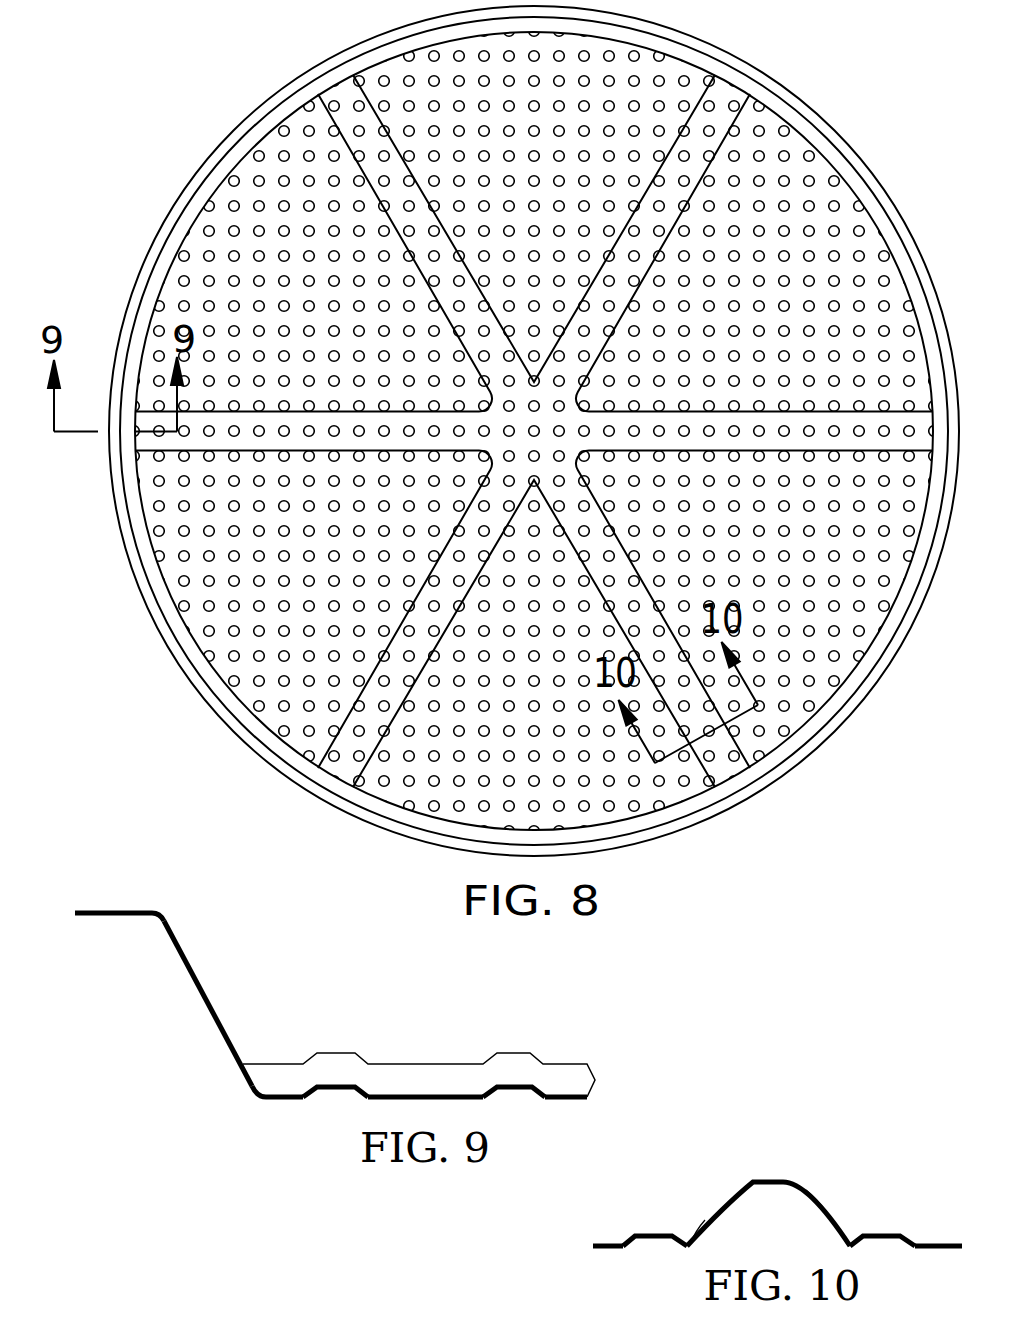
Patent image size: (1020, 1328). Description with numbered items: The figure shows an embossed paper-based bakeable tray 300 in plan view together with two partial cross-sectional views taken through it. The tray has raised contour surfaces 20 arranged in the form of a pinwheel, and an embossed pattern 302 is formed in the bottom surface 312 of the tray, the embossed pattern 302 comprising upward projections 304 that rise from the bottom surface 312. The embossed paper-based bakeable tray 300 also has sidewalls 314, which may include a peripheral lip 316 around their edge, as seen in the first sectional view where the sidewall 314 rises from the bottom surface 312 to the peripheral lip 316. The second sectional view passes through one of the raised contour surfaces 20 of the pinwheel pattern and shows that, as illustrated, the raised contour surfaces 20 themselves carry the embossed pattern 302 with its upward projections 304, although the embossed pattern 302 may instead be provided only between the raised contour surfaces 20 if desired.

In FIG. 8, the embossed paper-based bakeable tray 300 is at (872, 94).
In FIG. 8, the embossed pattern 302 is at (300, 168).
In FIG. 9, the upward projections 304 is at (510, 1052).
In FIG. 10, the upward projections 304 is at (888, 1235).
In FIG. 9, the bottom surface 312 is at (593, 1077).
In FIG. 10, the bottom surface 312 is at (598, 1243).
In FIG. 9, the sidewalls 314 is at (198, 980).
In FIG. 9, the peripheral lip 316 is at (137, 912).
In FIG. 9, the raised contour surfaces 20 is at (560, 1062).
In FIG. 10, the raised contour surfaces 20 is at (812, 1195).